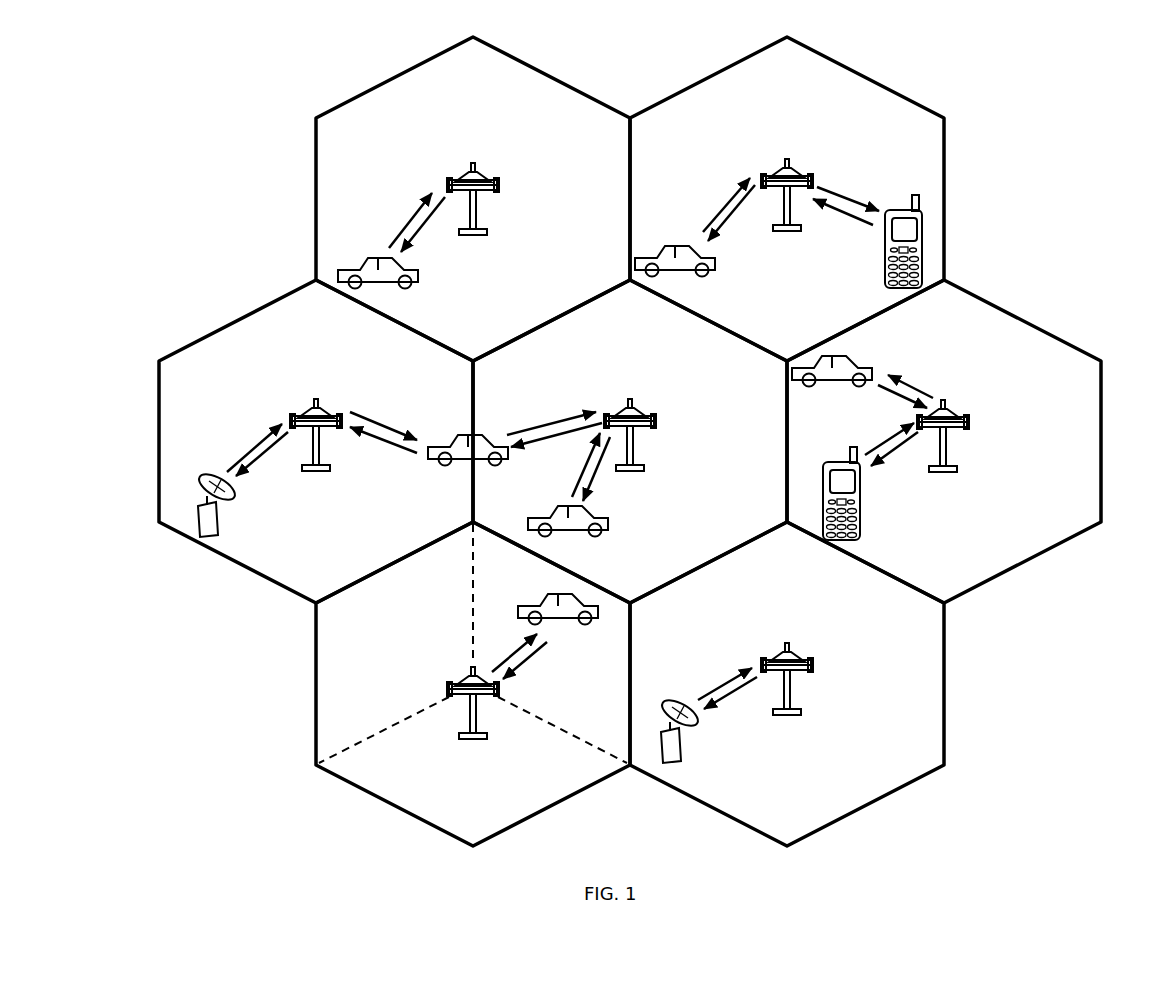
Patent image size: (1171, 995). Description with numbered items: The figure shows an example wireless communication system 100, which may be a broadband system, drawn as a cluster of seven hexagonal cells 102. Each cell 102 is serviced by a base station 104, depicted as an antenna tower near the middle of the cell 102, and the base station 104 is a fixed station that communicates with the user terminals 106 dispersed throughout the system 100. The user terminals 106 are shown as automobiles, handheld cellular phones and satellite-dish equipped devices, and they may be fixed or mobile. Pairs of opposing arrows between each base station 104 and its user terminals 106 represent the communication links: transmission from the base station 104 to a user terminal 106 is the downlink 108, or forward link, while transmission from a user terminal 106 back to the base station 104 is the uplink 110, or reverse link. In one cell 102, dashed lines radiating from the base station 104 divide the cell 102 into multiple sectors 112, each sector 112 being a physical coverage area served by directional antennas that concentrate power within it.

The wireless communication system 100 is at (1086, 119).
The cell 102 is at (407, 70).
The base station 104 is at (473, 162).
The user terminal 106 is at (420, 283).
The downlink 108 is at (417, 233).
The uplink 110 is at (414, 217).
The sector 112 is at (530, 802).